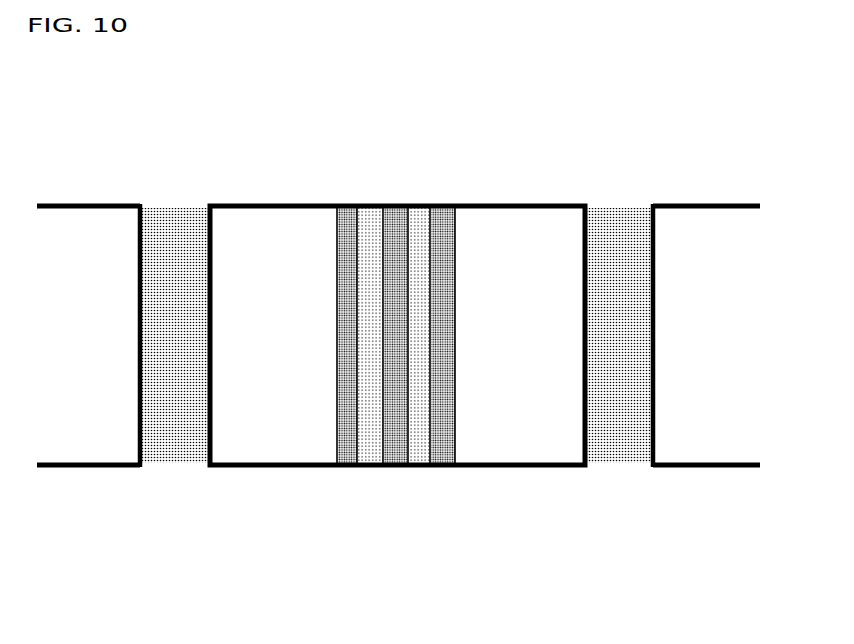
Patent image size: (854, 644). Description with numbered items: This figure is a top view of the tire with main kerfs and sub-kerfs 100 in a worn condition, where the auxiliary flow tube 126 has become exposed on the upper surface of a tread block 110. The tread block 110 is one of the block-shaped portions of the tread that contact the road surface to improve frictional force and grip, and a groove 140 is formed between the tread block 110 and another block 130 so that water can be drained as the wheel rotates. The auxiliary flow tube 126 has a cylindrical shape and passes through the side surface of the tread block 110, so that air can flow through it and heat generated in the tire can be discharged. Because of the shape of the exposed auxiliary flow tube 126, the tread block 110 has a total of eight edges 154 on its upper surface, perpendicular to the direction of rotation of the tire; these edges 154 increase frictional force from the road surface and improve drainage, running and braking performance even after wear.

The tire with main kerfs and sub-kerfs 100 is at (87, 82).
The tread block 110 is at (511, 231).
The auxiliary flow tube 126 is at (440, 206).
The another block 130 is at (703, 233).
The groove 140 is at (615, 231).
The edges 154 is at (585, 467).